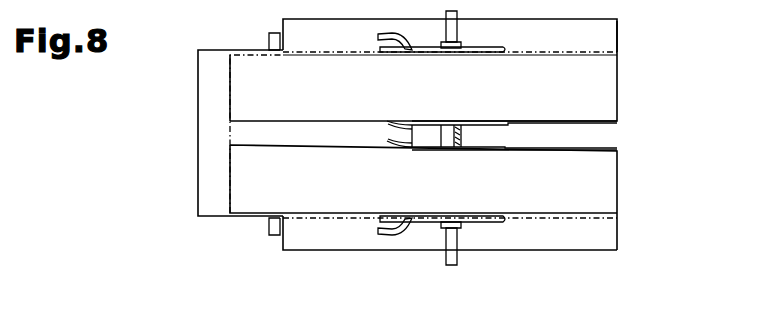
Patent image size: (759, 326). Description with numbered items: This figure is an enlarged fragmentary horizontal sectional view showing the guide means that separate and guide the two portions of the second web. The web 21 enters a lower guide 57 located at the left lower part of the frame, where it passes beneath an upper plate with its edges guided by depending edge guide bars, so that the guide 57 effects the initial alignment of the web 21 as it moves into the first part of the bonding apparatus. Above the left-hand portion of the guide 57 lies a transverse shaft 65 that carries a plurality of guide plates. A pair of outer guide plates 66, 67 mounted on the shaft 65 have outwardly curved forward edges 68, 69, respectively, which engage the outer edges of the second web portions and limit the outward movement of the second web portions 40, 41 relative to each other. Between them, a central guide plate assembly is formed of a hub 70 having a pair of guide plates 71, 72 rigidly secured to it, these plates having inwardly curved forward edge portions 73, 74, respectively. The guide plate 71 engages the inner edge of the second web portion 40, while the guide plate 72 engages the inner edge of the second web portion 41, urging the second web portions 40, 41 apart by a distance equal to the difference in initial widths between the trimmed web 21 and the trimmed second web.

The web 21 is at (213, 209).
The second web portion 41 is at (254, 75).
The second web portion 40 is at (258, 203).
The lower guide 57 is at (309, 252).
The transverse shaft 65 is at (455, 265).
The outer guide plate 66 is at (485, 222).
The outer guide plate 67 is at (490, 47).
The outwardly curved forward edge 68 is at (390, 236).
The outwardly curved forward edge 69 is at (395, 36).
The hub 70 is at (462, 135).
The guide plate 71 is at (482, 150).
The guide plate 72 is at (488, 123).
The inwardly curved forward edge portion 73 is at (393, 148).
The inwardly curved forward edge portion 74 is at (388, 120).